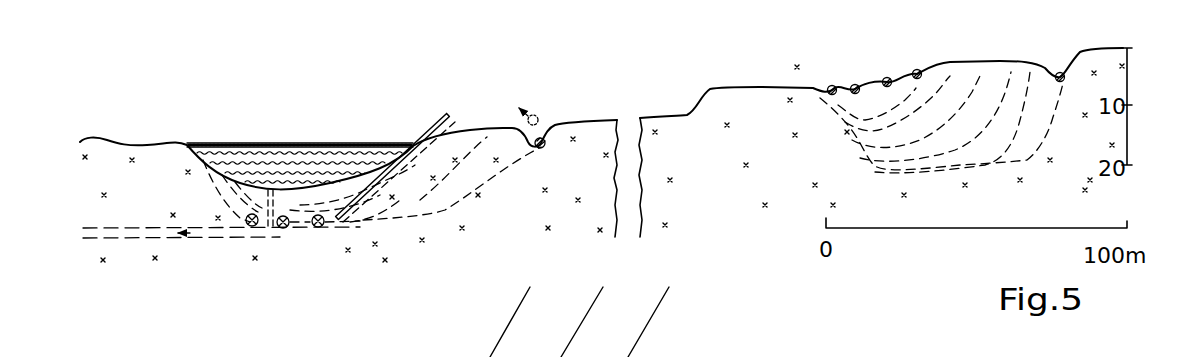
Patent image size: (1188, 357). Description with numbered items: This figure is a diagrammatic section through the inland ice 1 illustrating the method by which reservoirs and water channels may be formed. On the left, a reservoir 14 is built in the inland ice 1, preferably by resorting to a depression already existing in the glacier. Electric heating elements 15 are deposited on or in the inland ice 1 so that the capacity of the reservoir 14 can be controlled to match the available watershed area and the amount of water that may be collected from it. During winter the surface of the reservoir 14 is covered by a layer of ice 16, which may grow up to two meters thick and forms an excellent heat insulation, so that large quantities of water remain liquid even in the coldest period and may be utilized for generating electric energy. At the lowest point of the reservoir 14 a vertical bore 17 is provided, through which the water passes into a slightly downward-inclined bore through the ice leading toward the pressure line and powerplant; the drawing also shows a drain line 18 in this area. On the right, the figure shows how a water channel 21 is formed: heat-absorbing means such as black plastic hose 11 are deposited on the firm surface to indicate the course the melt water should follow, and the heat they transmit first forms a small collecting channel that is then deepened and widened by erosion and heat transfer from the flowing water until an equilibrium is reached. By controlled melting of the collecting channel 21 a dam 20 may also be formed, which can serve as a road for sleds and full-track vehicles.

The inland ice 1 is at (590, 140).
The black hose 11 is at (917, 70).
The reservoir 14 is at (360, 138).
The electric heating elements 15 is at (452, 122).
The layer of ice 16 is at (242, 142).
The vertical bore 17 is at (272, 228).
The collector drain pipe 18 is at (140, 233).
The dam 20 is at (765, 82).
The water channel 21 is at (993, 58).